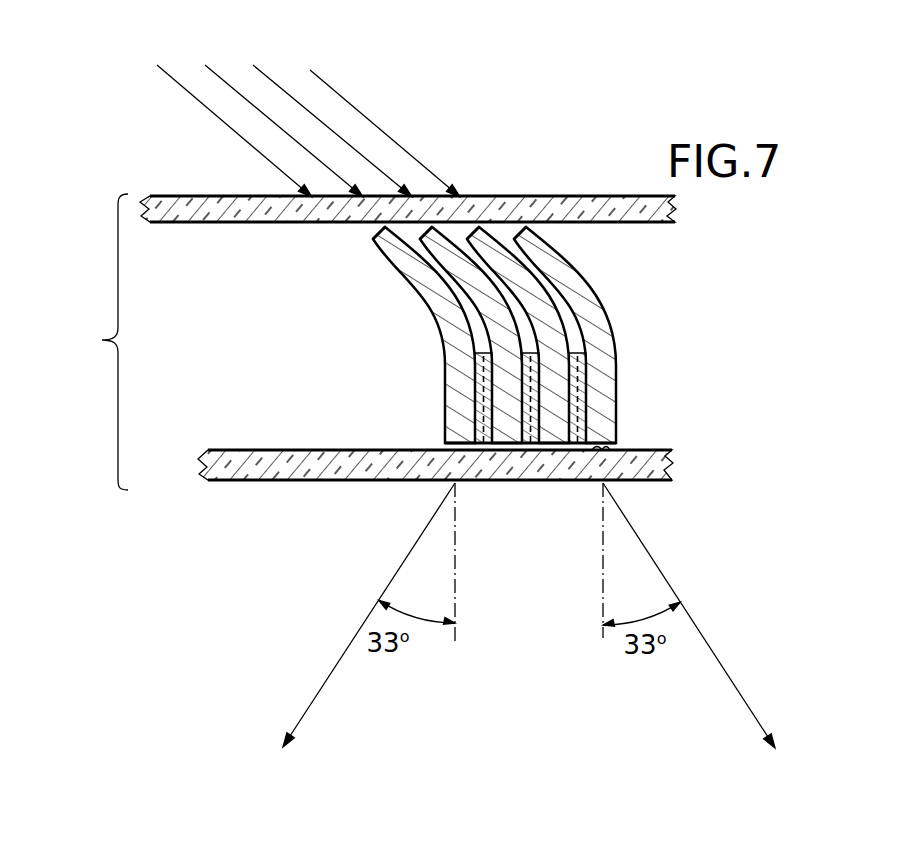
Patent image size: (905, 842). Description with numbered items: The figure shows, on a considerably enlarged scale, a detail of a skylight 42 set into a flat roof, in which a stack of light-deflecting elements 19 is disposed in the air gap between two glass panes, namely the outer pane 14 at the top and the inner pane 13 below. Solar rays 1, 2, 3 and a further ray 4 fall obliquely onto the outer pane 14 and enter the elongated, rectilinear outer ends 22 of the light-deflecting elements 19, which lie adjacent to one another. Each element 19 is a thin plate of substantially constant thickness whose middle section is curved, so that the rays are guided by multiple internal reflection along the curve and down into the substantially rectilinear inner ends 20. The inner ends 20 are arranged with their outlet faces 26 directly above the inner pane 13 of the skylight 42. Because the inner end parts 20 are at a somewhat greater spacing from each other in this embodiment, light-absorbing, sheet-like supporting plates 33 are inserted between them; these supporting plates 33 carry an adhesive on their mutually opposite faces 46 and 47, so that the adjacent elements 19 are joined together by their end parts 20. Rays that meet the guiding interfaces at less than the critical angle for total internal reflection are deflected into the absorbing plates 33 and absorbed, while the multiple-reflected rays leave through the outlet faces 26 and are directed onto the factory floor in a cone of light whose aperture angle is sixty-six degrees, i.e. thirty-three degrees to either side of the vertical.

The solar ray 1 is at (218, 115).
The solar ray 2 is at (272, 115).
The solar ray 3 is at (320, 115).
The incident light ray 4 is at (373, 117).
The inner pane 13 is at (295, 465).
The outer pane 14 is at (283, 224).
The light-deflecting element 19 is at (492, 293).
The inner end 20 is at (506, 440).
The outer end 22 is at (466, 226).
The outlet face 26 is at (620, 451).
The supporting plate 33 is at (530, 395).
The skylight 42 is at (93, 342).
The face of supporting plate 46 is at (480, 398).
The face of supporting plate 47 is at (580, 380).